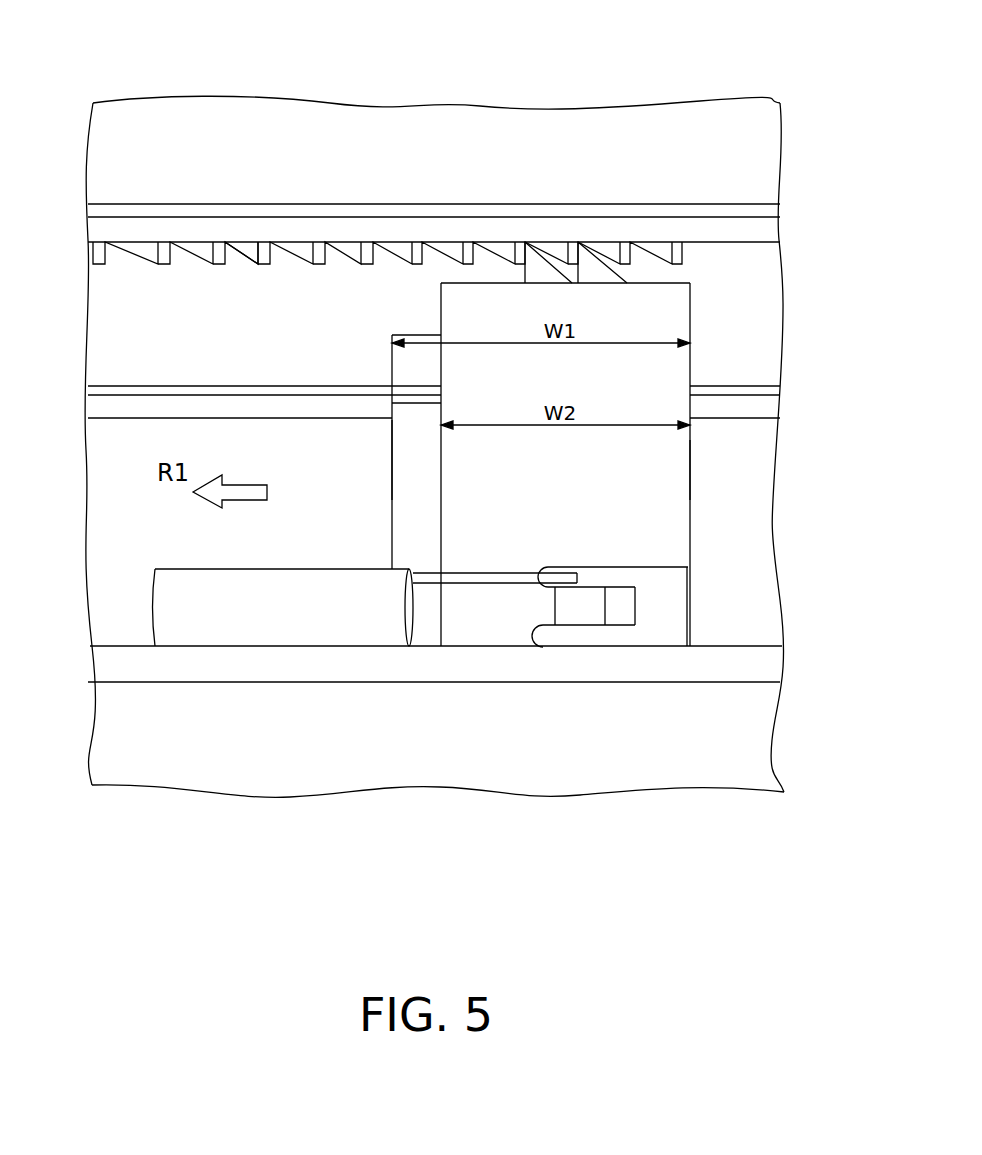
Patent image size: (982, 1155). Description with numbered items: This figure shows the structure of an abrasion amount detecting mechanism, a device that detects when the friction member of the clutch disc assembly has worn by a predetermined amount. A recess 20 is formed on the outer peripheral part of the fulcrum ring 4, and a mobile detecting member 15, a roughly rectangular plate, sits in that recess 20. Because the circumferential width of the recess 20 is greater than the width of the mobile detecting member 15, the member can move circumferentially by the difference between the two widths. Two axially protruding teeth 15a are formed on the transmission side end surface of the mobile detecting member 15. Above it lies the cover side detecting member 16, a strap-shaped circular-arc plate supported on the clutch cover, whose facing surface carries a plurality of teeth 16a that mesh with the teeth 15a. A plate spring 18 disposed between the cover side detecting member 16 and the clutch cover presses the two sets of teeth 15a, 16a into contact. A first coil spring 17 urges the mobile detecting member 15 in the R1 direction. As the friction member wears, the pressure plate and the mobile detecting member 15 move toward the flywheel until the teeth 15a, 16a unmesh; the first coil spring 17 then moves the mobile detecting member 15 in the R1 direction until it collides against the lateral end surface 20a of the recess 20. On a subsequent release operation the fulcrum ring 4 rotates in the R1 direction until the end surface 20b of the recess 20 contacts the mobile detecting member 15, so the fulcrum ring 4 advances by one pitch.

The fulcrum ring 4 is at (131, 447).
The mobile detecting member 15 is at (647, 341).
The teeth 15a is at (533, 277).
The cover side detecting member 16 is at (362, 223).
The teeth 16a is at (252, 247).
The first coil spring 17 is at (328, 622).
The plate spring 18 is at (422, 212).
The recess 20 is at (422, 428).
The lateral end surface 20a is at (392, 482).
The end surface 20b is at (690, 453).